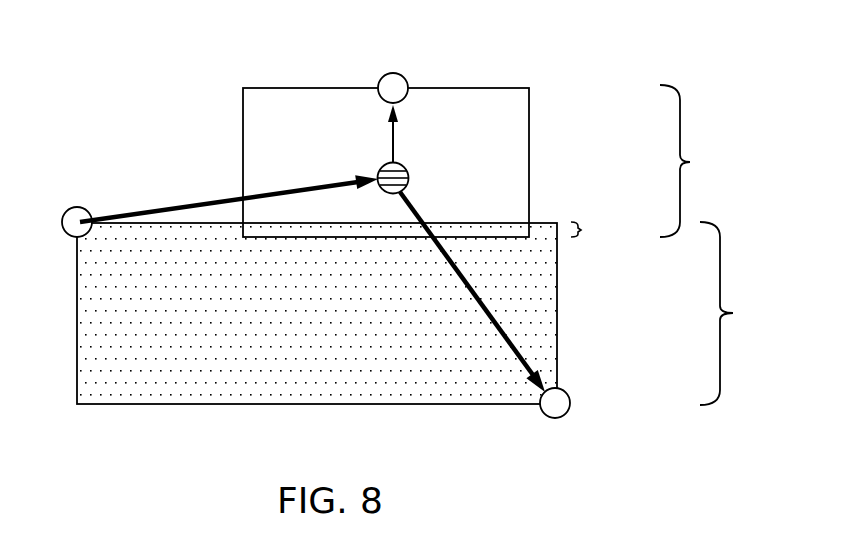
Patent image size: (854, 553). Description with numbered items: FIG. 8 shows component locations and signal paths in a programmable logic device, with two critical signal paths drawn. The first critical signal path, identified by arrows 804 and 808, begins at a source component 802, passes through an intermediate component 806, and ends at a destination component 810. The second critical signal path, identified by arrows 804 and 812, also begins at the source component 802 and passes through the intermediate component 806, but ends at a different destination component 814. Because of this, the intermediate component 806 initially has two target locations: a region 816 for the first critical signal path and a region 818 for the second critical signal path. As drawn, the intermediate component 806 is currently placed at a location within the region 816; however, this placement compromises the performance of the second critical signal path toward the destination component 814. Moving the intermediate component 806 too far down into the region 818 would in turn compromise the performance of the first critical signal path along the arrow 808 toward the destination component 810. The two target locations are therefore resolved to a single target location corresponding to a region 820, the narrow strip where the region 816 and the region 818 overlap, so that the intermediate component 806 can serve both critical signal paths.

The source component 802 is at (66, 208).
The arrow 804 is at (186, 204).
The intermediate component 806 is at (409, 172).
The arrow 808 is at (390, 140).
The destination component 810 is at (397, 73).
The arrow 812 is at (493, 308).
The destination component 814 is at (570, 404).
The region 816 is at (690, 162).
The region 818 is at (733, 313).
The region 820 is at (583, 232).